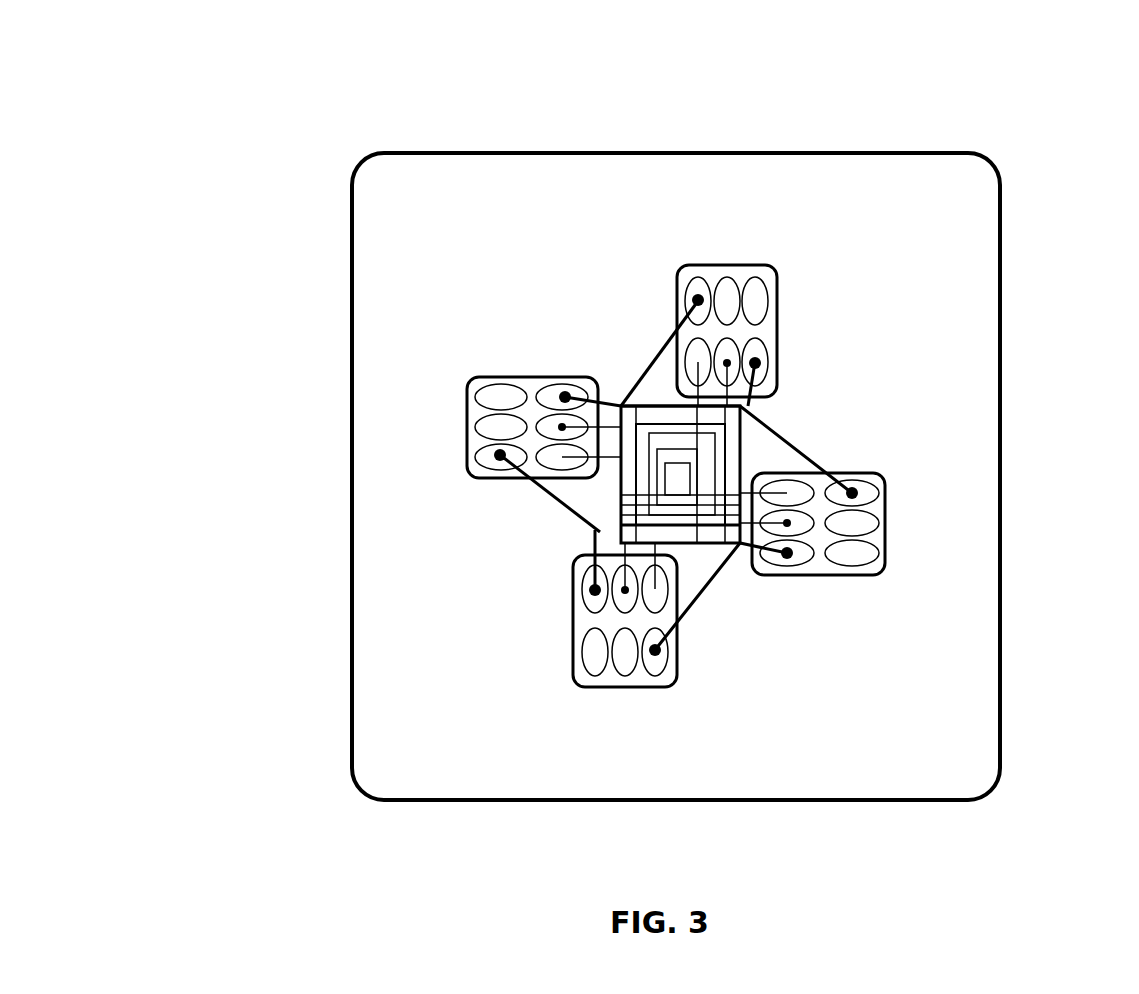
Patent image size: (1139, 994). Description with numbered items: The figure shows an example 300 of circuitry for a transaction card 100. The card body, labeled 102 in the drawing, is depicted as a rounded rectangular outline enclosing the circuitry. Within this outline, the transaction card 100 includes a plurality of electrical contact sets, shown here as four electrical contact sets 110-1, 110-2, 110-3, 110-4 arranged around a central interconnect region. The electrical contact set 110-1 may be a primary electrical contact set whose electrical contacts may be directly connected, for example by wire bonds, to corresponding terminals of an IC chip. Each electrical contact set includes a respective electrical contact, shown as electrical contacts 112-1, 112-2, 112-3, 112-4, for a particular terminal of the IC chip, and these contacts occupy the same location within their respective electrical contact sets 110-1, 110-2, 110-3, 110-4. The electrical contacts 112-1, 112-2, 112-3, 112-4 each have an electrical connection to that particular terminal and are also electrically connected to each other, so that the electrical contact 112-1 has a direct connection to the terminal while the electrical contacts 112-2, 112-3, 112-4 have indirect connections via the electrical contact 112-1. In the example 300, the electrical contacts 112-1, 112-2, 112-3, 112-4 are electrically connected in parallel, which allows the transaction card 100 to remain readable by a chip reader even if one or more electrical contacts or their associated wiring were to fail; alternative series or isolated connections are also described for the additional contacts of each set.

The example of circuitry 300 is at (166, 38).
The transaction card 100 is at (321, 158).
The substrate 102 is at (492, 746).
The electrical contact set 110-1 is at (690, 249).
The electrical contact set 110-2 is at (932, 487).
The electrical contact set 110-3 is at (679, 701).
The electrical contact set 110-4 is at (433, 479).
The electrical contact 112-1 is at (697, 352).
The electrical contact 112-2 is at (778, 490).
The electrical contact 112-3 is at (660, 573).
The electrical contact 112-4 is at (583, 453).